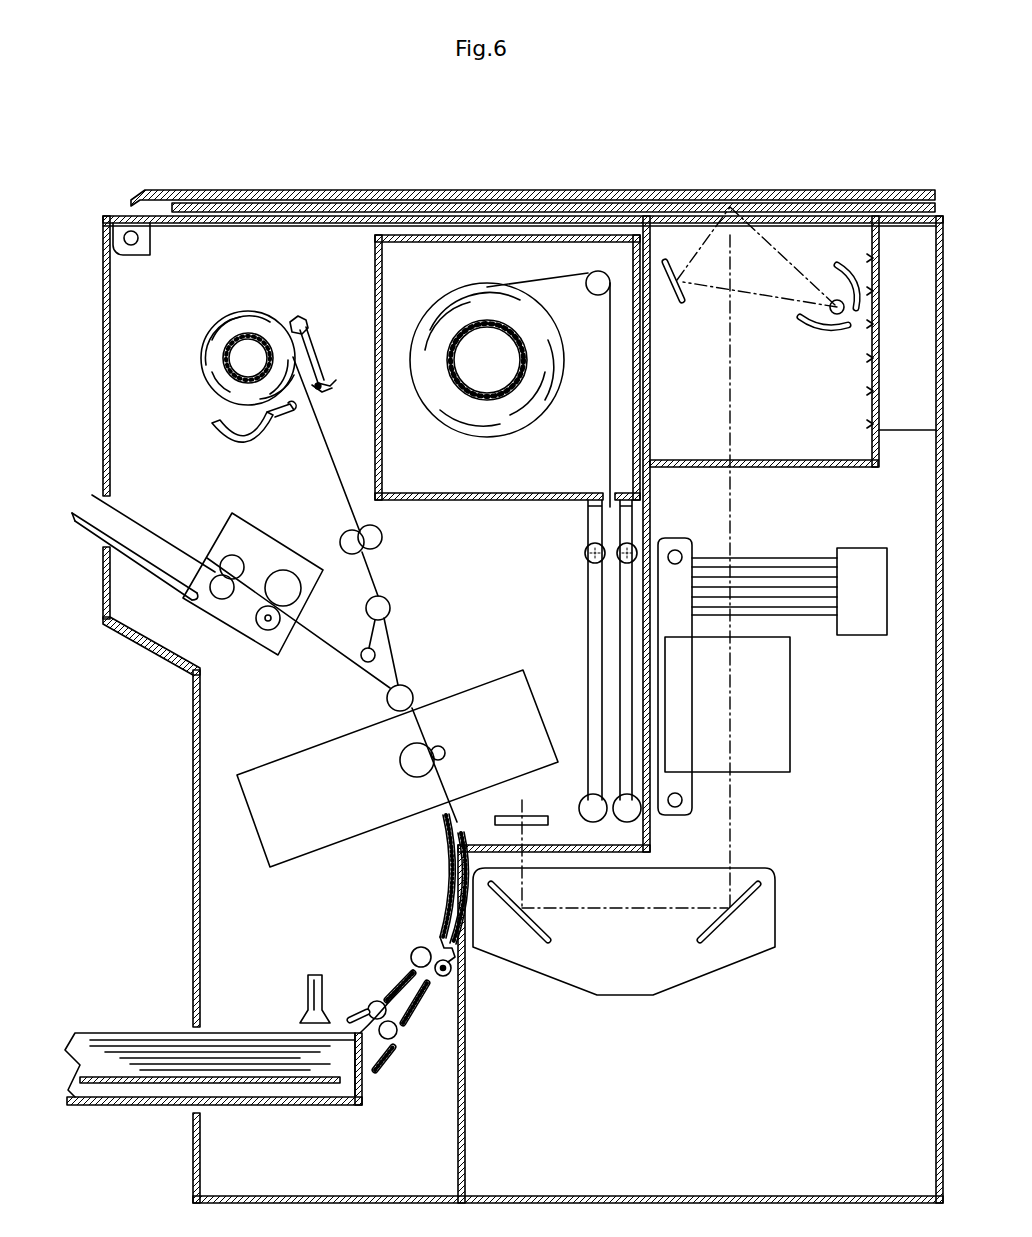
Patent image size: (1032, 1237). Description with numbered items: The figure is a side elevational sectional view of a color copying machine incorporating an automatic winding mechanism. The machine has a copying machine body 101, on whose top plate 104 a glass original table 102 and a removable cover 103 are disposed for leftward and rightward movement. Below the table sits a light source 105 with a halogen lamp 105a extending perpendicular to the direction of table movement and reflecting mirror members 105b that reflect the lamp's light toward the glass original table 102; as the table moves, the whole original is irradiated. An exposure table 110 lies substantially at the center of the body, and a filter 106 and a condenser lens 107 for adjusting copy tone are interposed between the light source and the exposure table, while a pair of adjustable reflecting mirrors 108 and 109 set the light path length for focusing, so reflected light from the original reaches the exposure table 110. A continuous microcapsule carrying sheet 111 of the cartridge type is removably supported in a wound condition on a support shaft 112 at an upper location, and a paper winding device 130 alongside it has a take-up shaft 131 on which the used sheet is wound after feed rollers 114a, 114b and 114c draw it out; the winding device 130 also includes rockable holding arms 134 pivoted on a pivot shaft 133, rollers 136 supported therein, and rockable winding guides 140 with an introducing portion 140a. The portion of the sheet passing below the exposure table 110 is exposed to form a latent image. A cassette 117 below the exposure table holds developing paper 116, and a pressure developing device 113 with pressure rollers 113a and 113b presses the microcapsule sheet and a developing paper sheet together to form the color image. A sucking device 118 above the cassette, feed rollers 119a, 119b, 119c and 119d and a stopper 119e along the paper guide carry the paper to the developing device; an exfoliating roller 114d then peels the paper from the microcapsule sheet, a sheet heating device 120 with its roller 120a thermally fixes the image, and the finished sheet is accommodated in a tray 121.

The copying machine body 101 is at (117, 186).
The glass original table 102 is at (587, 195).
The cover 103 is at (540, 192).
The top plate 104 is at (430, 222).
The light source 105 is at (794, 337).
The halogen lamp 105a is at (834, 302).
The reflecting mirror members 105b is at (683, 301).
The filter 106 is at (833, 614).
The condenser lens 107 is at (785, 730).
The reflecting mirror 108 is at (760, 902).
The reflecting mirror 109 is at (533, 930).
The exposure table 110 is at (553, 826).
The microcapsule carrying sheet 111 is at (608, 455).
The support shaft 112 is at (487, 345).
The pressure developing device 113 is at (509, 682).
The pressure roller 113a is at (448, 752).
The pressure roller 113b is at (402, 764).
The feed roller 114a is at (585, 552).
The feed roller 114b is at (607, 822).
The feed roller 114c is at (405, 688).
The exfoliating roller 114d is at (375, 652).
The developing paper 116 is at (140, 1040).
The cassette 117 is at (315, 1107).
The sucking device 118 is at (308, 980).
The feed roller 119a is at (378, 998).
The feed roller 119b is at (390, 1040).
The feed roller 119c is at (415, 948).
The feed roller 119d is at (446, 978).
The stopper 119e is at (440, 895).
The sheet heating device 120 is at (278, 545).
The roller 120a is at (268, 632).
The tray 121 is at (170, 600).
The paper winding device 130 is at (201, 318).
The take-up shaft 131 is at (250, 352).
The pivot shaft 133 is at (324, 385).
The holding arm 134 is at (312, 332).
The roller 136 is at (309, 309).
The winding guide 140 is at (287, 418).
The introducing portion 140a is at (212, 425).